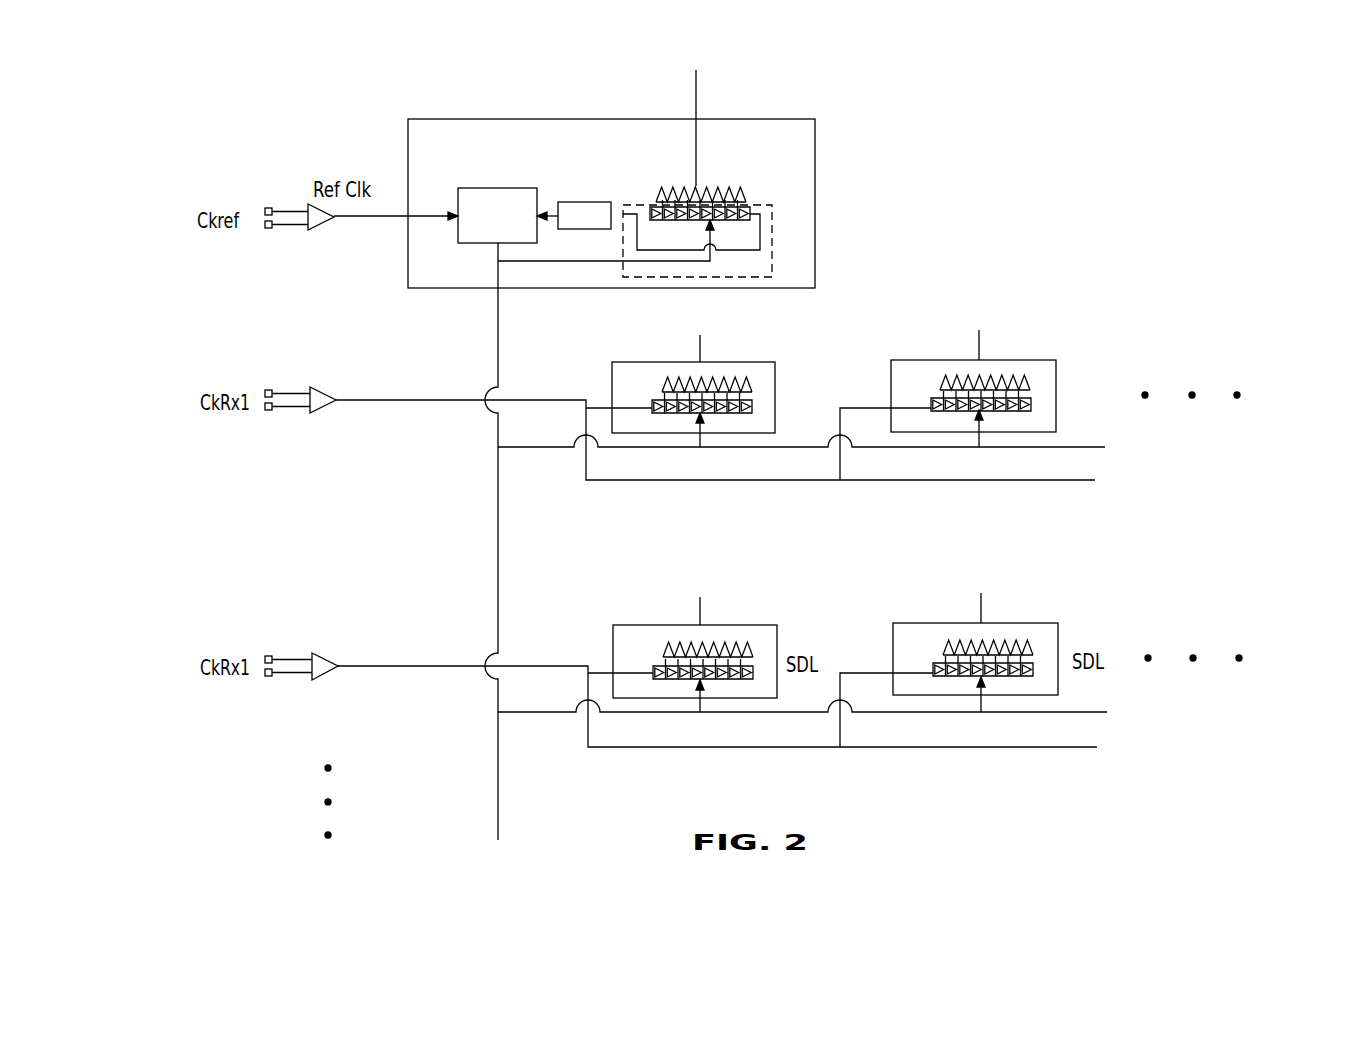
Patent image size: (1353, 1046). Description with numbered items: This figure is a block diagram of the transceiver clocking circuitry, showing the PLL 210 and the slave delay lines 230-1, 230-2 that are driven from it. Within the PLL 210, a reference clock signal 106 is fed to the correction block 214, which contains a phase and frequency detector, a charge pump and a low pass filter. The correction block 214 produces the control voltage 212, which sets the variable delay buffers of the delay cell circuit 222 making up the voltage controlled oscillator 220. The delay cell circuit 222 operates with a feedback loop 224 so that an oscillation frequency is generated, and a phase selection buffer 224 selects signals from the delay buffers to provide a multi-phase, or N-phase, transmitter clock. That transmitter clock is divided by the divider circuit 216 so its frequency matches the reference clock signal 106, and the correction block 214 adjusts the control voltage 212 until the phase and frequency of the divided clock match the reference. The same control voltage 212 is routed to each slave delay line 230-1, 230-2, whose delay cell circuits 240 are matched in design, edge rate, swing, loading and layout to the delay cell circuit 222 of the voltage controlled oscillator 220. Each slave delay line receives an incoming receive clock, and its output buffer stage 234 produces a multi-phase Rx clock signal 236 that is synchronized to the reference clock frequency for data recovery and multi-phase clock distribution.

The reference clock signal 106 is at (378, 205).
The PLL 210 is at (815, 230).
The control voltage (Vctrl) 212 is at (578, 253).
The correction block 214 is at (468, 188).
The divider circuit 216 is at (571, 202).
The voltage controlled oscillator (VCO) 220 is at (763, 276).
The delay cell circuit 222 is at (772, 206).
The feedback loop / phase selection buffer 224 is at (655, 186).
The slave delay line 230-1 is at (632, 344).
The slave delay line 230-2 is at (910, 342).
The output buffer stage 234 is at (753, 388).
The Rx clock signal 236 is at (706, 340).
The delay cell circuit 240 is at (725, 414).